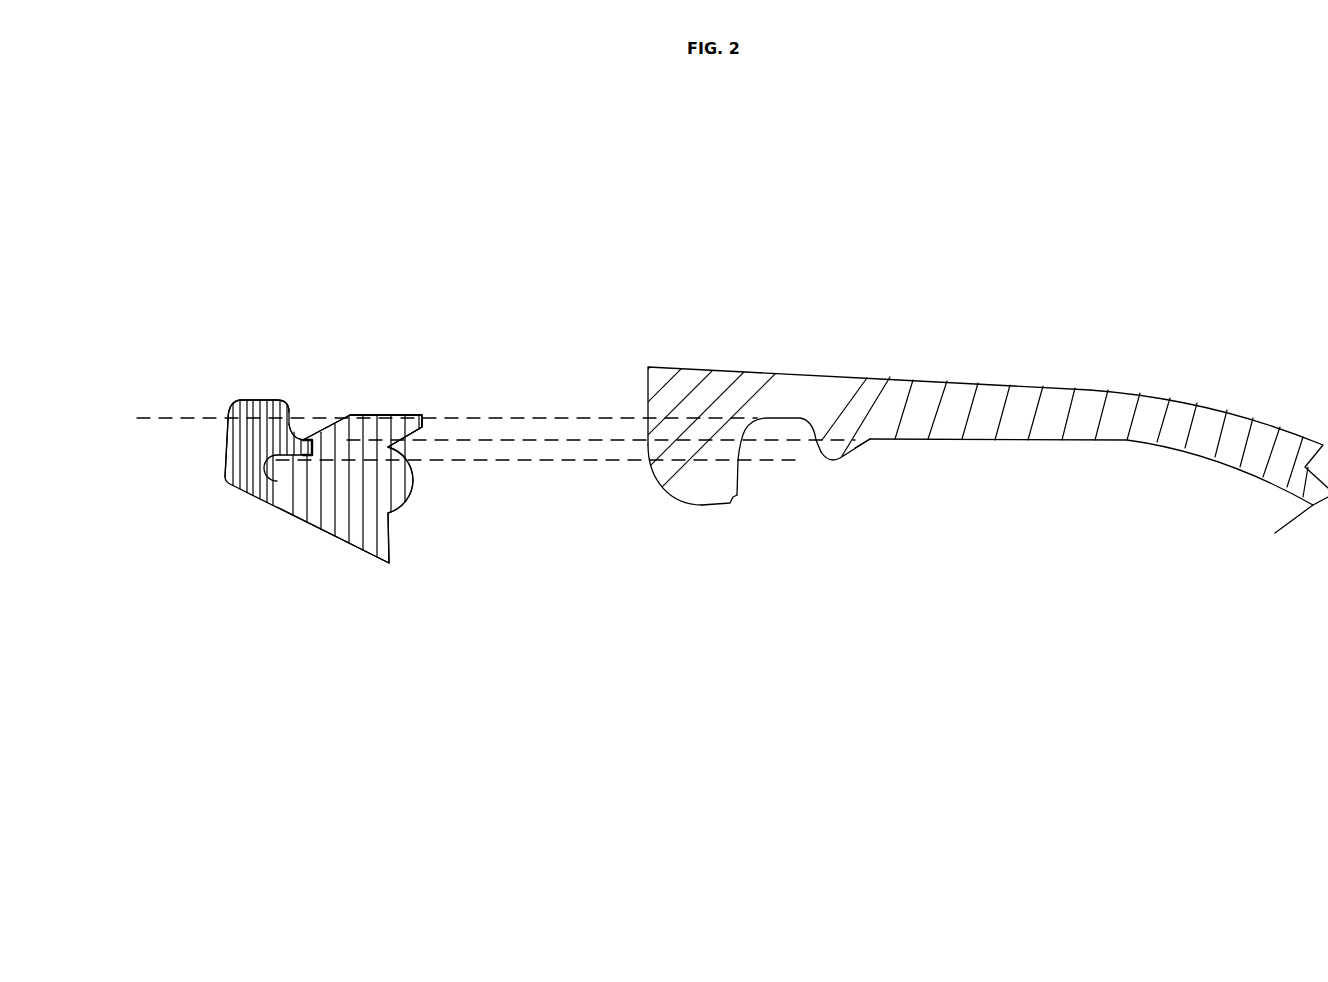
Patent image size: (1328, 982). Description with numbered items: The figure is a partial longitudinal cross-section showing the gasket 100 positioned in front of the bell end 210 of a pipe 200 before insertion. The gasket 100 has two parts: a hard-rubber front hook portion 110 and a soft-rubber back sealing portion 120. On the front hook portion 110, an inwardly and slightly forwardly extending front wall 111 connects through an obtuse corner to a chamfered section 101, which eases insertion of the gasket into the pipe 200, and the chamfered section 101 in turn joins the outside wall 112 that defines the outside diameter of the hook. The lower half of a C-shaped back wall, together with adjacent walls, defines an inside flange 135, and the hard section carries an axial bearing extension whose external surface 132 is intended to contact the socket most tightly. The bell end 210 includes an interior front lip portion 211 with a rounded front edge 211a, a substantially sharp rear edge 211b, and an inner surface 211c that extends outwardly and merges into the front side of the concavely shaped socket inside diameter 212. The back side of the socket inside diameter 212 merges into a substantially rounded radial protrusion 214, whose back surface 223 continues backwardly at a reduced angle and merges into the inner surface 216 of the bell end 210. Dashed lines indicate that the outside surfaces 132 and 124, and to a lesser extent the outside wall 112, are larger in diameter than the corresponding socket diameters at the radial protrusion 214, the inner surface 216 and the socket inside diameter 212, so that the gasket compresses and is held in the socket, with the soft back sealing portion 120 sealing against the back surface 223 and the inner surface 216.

The gasket 100 is at (197, 333).
The chamfered section 101 is at (233, 415).
The front hook portion 110 is at (238, 467).
The front wall 111 is at (226, 452).
The outside wall 112 is at (260, 398).
The back sealing portion 120 is at (372, 513).
The outside surface 124 is at (378, 413).
The external surface 132 is at (305, 438).
The inside flange 135 is at (267, 492).
The pipe 200 is at (657, 323).
The bell end 210 is at (639, 361).
The interior front lip portion 211 is at (683, 524).
The rounded front edge 211a is at (668, 490).
The sharp rear edge 211b is at (732, 505).
The inner surface of the lip portion 211c is at (738, 480).
The socket inside diameter 212 is at (789, 416).
The radial protrusion 214 is at (832, 460).
The inner surface of the bell end 216 is at (924, 388).
The back surface of the radial protrusion 223 is at (853, 450).